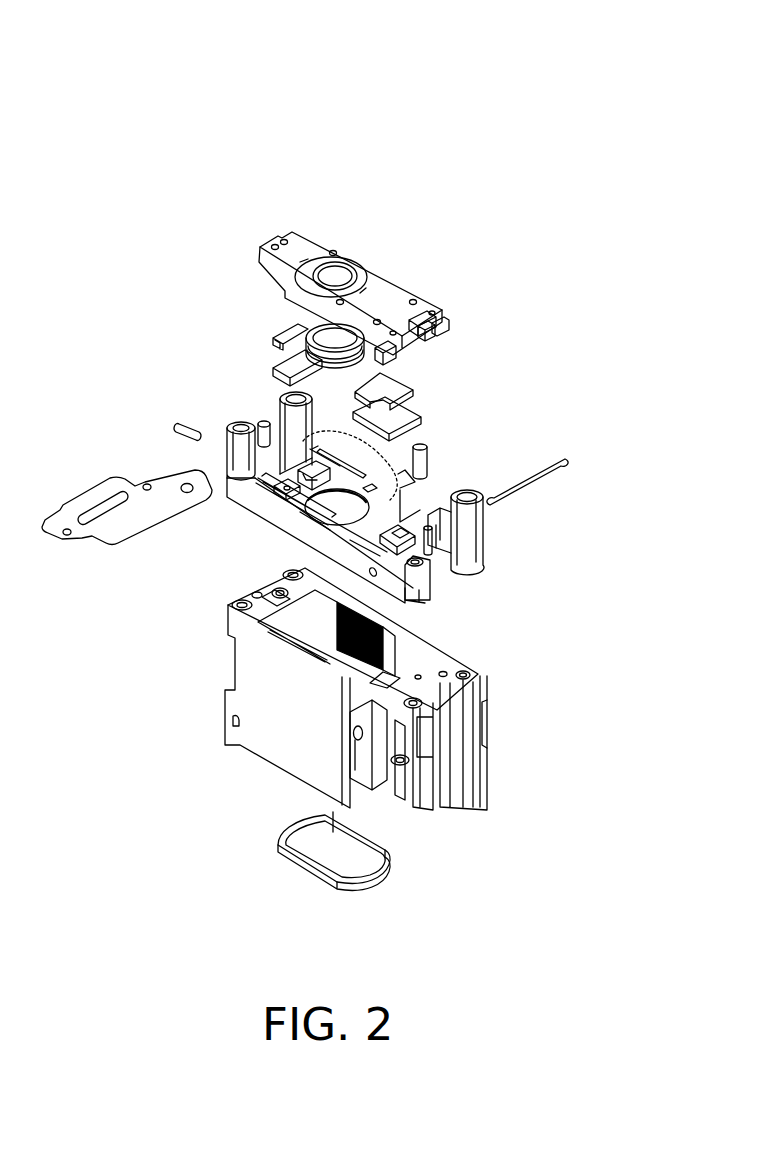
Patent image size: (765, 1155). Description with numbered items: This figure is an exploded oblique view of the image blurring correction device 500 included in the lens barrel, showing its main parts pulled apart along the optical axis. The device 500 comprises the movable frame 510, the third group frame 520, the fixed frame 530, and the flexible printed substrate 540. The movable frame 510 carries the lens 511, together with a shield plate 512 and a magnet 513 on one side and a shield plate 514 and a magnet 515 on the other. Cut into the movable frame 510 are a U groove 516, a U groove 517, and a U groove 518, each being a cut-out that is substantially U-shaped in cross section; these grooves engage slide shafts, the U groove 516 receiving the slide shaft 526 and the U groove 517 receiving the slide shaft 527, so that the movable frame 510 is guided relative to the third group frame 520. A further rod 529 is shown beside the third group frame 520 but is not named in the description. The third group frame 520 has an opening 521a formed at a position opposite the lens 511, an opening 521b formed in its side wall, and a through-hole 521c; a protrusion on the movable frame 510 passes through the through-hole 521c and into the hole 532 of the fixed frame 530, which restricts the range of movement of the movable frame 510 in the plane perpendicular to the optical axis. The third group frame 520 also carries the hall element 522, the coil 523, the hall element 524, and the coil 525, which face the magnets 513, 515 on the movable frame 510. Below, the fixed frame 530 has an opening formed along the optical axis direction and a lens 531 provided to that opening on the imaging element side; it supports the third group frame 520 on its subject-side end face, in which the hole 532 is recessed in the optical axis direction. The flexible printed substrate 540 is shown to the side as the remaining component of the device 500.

The image blurring correction device 500 is at (133, 92).
The movable frame 510 is at (305, 240).
The lens 511 is at (330, 338).
The shield plate 512 is at (290, 340).
The magnet 513 is at (290, 372).
The shield plate 514 is at (395, 389).
The magnet 515 is at (388, 414).
The U groove 516 is at (420, 320).
The U groove 517 is at (248, 262).
The U groove 518 is at (395, 360).
The third group frame 520 is at (470, 557).
The opening 521a is at (337, 507).
The opening 521b is at (280, 430).
The through-hole 521c is at (275, 478).
The hall element 522 is at (296, 484).
The coil 523 is at (283, 494).
The hall element 524 is at (392, 523).
The coil 525 is at (406, 533).
The slide shaft 526 is at (421, 456).
The slide shaft 527 is at (176, 429).
The shaft 529 is at (523, 487).
The fixed frame 530 is at (472, 692).
The lens 531 is at (357, 858).
The hole 532 is at (262, 585).
The flexible printed substrate 540 is at (108, 525).